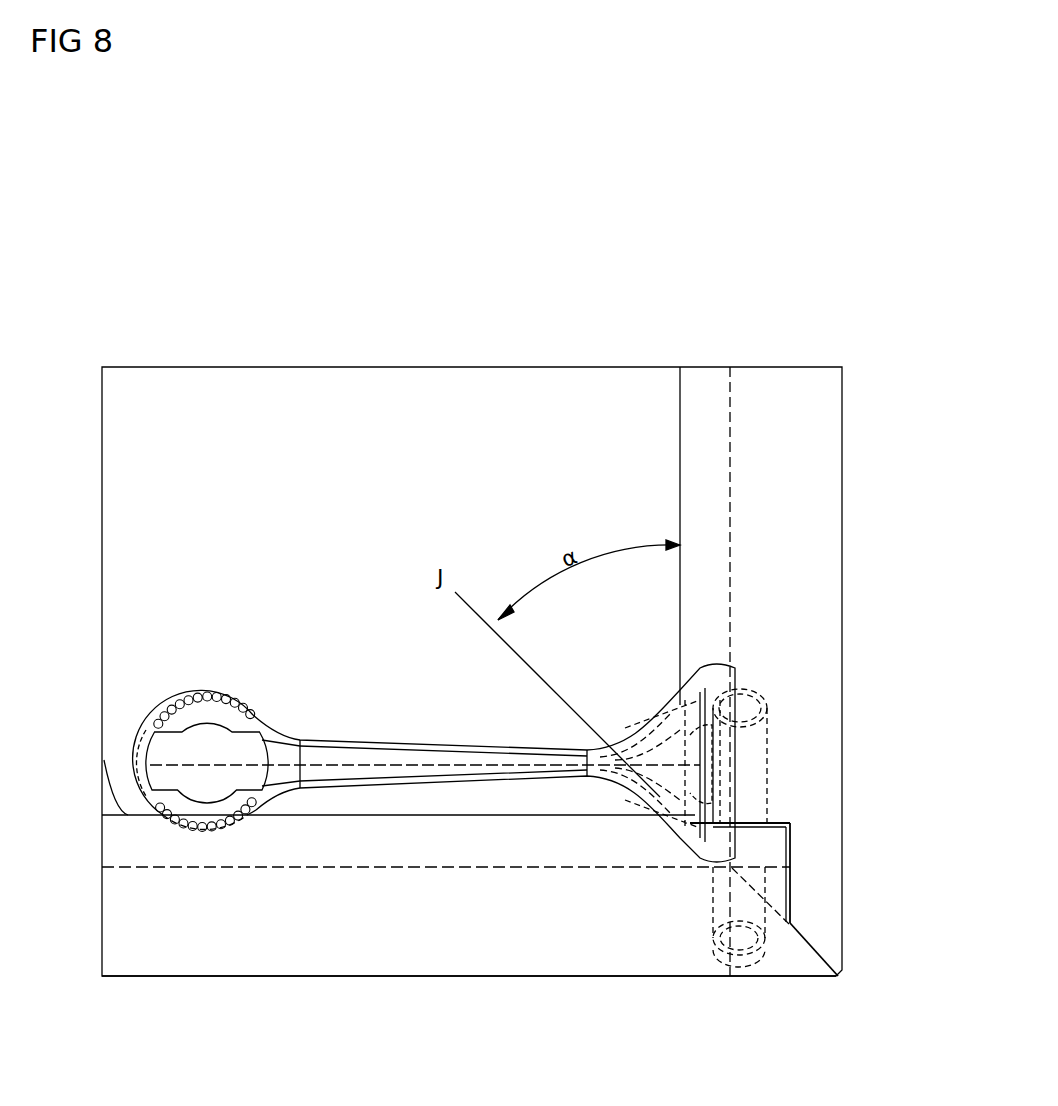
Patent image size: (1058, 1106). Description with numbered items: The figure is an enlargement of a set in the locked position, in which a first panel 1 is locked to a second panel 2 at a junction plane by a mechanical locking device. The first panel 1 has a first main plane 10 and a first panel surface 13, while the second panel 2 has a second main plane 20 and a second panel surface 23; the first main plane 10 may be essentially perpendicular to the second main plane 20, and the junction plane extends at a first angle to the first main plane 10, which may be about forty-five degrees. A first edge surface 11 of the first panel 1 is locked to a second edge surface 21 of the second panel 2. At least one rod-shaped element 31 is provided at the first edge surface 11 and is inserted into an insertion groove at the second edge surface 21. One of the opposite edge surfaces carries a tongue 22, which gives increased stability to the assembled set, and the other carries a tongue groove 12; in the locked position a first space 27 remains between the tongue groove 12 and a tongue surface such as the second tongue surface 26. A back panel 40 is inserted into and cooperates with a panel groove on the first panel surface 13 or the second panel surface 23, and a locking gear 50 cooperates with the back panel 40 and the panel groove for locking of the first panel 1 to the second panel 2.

The first panel 1 is at (845, 728).
The second panel 2 is at (630, 984).
The first main plane 10 is at (680, 502).
The first edge surface 11 is at (815, 975).
The tongue groove 12 is at (790, 820).
The first panel surface 13 is at (680, 462).
The second main plane 20 is at (137, 815).
The second edge surface 21 is at (838, 940).
The tongue 22 is at (777, 855).
The second panel surface 23 is at (115, 815).
The second tongue surface 26 is at (790, 890).
The first space 27 is at (790, 840).
The rod-shaped element 31 is at (750, 822).
The back panel 40 is at (560, 406).
The locking gear 50 is at (350, 742).